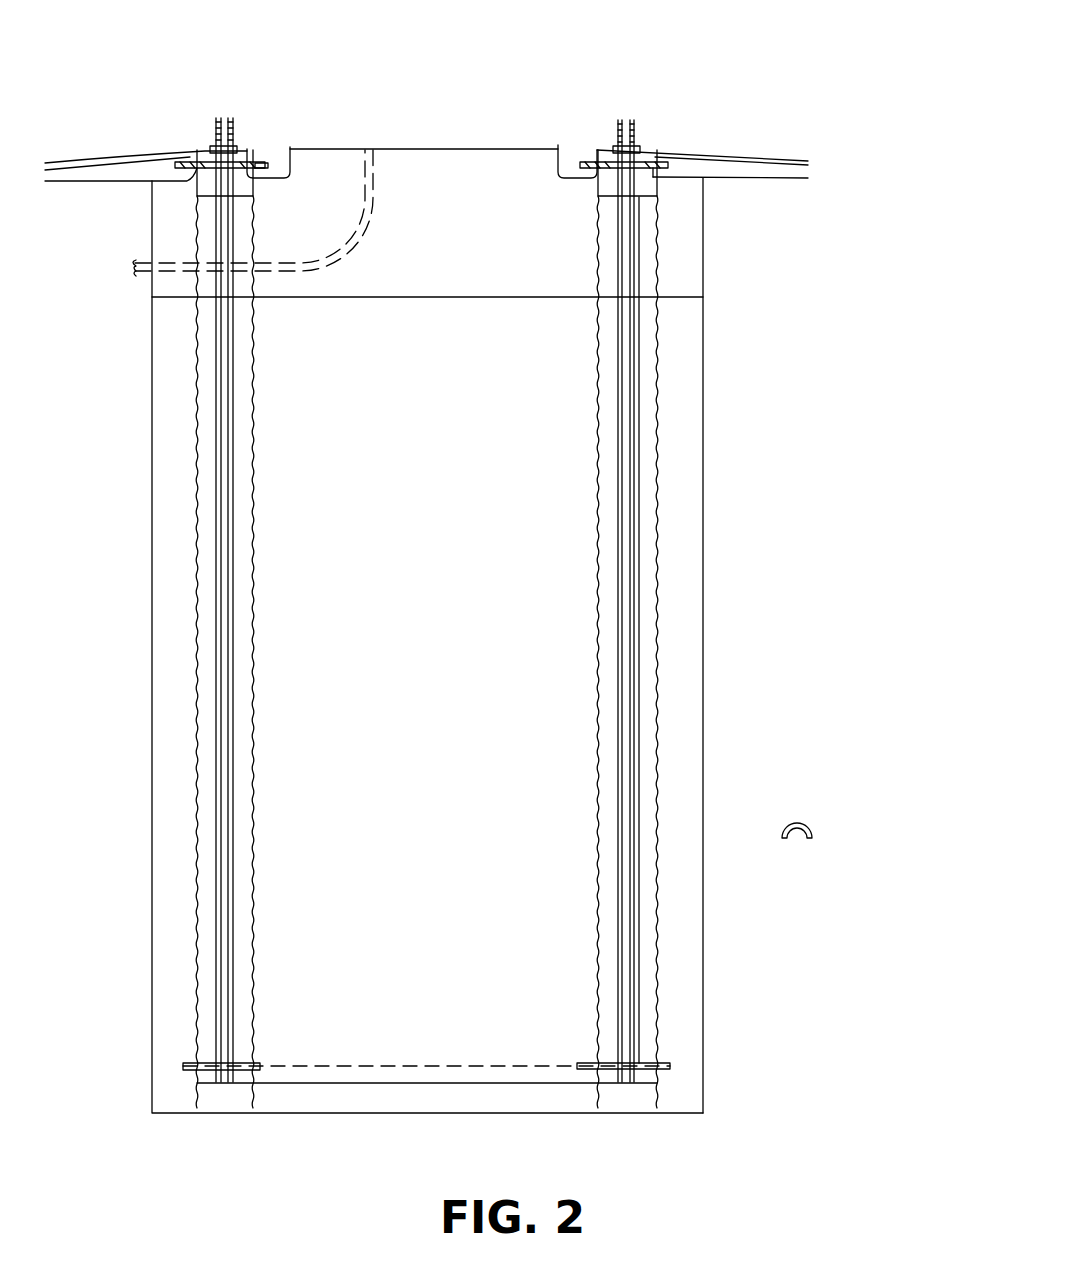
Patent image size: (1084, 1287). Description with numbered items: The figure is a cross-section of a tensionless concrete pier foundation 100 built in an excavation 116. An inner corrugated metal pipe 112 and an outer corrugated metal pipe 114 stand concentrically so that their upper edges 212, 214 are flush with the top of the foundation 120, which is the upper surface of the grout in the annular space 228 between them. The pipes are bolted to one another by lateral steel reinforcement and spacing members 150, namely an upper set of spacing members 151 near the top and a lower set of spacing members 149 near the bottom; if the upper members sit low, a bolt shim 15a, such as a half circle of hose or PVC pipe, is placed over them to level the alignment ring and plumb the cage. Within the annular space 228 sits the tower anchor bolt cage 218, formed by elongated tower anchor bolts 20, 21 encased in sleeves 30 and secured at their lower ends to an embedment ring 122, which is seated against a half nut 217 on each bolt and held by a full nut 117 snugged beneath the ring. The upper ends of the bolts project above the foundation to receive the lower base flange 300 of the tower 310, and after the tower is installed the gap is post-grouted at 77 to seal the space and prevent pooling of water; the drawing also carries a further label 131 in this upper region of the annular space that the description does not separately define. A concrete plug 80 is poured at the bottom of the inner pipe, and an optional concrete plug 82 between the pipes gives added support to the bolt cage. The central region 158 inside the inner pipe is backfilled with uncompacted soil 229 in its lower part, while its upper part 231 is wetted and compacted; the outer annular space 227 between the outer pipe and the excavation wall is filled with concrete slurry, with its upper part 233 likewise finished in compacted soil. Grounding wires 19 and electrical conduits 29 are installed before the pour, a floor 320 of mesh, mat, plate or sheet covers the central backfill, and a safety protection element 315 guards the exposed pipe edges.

The tensionless concrete pier foundation 100 is at (846, 70).
The grounding wires 19 is at (196, 87).
The tower anchor bolt 20 is at (238, 124).
The tower anchor bolt 21 is at (638, 122).
The electrical conduits 29 is at (348, 258).
The sleeve 30 is at (238, 436).
The post-grout 77 is at (272, 178).
The concrete plug 80 is at (470, 1116).
The concrete plug 82 is at (223, 1093).
The inner corrugated metal pipe 112 is at (598, 333).
The outer corrugated metal pipe 114 is at (667, 443).
The excavation 116 is at (703, 683).
The full nut 117 is at (647, 1063).
The top of the foundation 120 is at (598, 143).
The embedment ring 122 is at (638, 1065).
The void 131 is at (643, 180).
The lower set of spacing members 149 is at (670, 1065).
The lateral steel reinforcement and spacing members 150 is at (172, 174).
The upper set of spacing members 151 is at (655, 178).
The central region 158 is at (521, 825).
The upper edge of inner CMP 212 is at (596, 150).
The upper edge of outer CMP 214 is at (662, 157).
The half nut 217 is at (625, 1063).
The tower anchor bolt cage 218 is at (649, 496).
The annular space 227 is at (683, 637).
The annular space 228 is at (649, 469).
The uncompacted soil 229 is at (434, 721).
The upper part of the central region 231 is at (497, 223).
The upper part of the outer annular space 233 is at (673, 258).
The lower base flange 300 is at (657, 148).
The tower 310 is at (222, 118).
The safety protection element 315 is at (197, 150).
The floor 320 is at (400, 153).
The bolt shim 15a is at (797, 822).